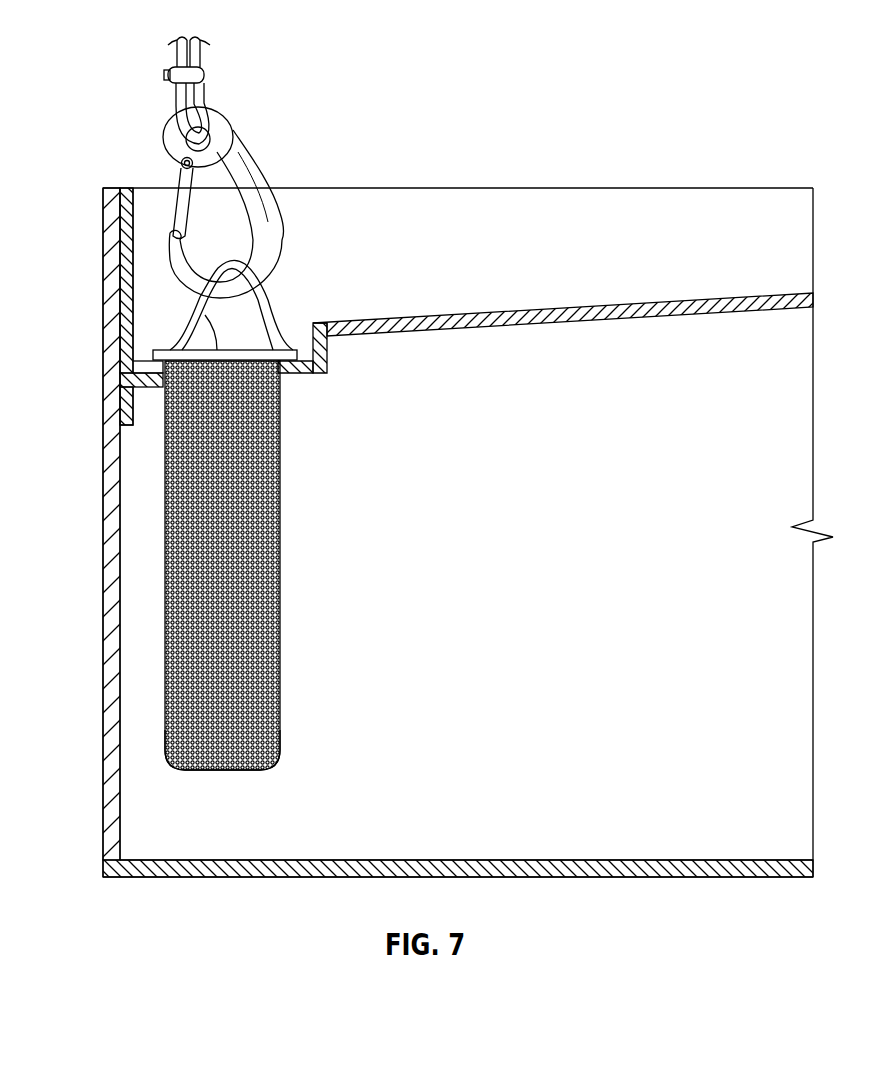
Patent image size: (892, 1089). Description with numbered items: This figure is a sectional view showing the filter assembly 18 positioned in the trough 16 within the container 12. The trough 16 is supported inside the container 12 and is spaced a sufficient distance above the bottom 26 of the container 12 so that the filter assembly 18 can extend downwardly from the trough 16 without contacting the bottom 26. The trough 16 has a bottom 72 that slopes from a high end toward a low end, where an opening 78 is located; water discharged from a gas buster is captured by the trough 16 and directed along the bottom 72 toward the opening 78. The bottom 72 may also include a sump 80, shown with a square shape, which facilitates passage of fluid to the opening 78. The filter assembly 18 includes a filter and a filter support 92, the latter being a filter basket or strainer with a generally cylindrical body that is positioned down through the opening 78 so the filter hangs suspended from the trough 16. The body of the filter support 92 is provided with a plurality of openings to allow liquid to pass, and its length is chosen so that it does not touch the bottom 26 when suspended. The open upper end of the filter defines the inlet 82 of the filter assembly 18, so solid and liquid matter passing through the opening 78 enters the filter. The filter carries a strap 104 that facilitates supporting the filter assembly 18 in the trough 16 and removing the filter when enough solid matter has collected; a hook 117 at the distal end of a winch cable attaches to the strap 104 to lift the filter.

The container 12 is at (103, 583).
The trough 16 is at (566, 188).
The filter assembly 18 is at (282, 545).
The bottom 26 is at (548, 860).
The bottom 72 is at (584, 306).
The opening 78 is at (284, 374).
The sump 80 is at (327, 342).
The inlet 82 is at (202, 322).
The filter support 92 is at (284, 690).
The strap 104 is at (270, 316).
The hook 117 is at (258, 168).